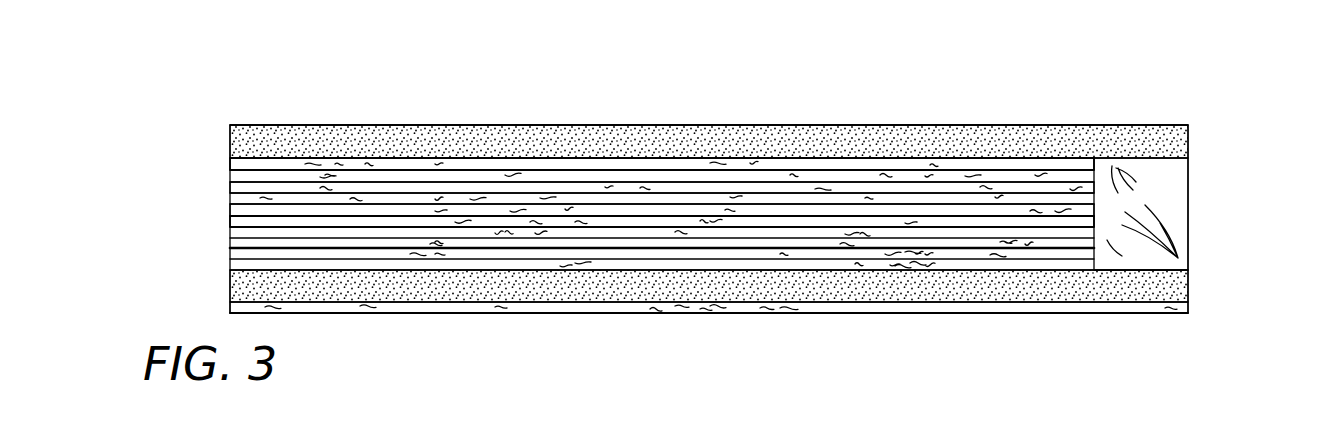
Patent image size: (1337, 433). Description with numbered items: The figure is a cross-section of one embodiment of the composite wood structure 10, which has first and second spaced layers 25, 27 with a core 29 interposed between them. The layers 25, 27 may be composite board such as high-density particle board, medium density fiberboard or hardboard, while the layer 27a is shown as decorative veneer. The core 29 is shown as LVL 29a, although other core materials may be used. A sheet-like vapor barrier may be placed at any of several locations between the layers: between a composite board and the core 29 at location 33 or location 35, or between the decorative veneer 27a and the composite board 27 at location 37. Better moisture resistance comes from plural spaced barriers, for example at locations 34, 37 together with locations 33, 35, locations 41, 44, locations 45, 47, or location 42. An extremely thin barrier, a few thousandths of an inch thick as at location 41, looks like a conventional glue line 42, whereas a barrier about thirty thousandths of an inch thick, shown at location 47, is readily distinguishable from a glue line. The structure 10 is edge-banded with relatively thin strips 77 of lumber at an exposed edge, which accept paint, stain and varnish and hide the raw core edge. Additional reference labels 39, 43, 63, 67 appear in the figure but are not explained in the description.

The composite wood structure 10 is at (887, 100).
The layer 25 is at (1175, 148).
The layer 27 is at (1165, 290).
The decorative veneer 27a is at (1142, 313).
The core 29 is at (698, 192).
The LVL 29a is at (228, 208).
The location 33 is at (990, 160).
The location 34 is at (1117, 128).
The location 35 is at (962, 272).
The location 37 is at (1188, 307).
The fibrous reinforcing layers 39 is at (407, 222).
The location 41 is at (228, 168).
The glue line 42 is at (1045, 218).
The adhesive layer 43 is at (228, 226).
The location 44 is at (228, 259).
The location 45 is at (228, 182).
The location 47 is at (228, 248).
The bottom surface region 63 is at (677, 313).
The bottom surface region 67 is at (473, 315).
The strips 77 is at (1165, 198).